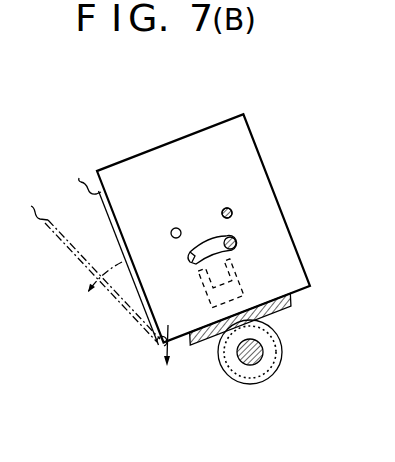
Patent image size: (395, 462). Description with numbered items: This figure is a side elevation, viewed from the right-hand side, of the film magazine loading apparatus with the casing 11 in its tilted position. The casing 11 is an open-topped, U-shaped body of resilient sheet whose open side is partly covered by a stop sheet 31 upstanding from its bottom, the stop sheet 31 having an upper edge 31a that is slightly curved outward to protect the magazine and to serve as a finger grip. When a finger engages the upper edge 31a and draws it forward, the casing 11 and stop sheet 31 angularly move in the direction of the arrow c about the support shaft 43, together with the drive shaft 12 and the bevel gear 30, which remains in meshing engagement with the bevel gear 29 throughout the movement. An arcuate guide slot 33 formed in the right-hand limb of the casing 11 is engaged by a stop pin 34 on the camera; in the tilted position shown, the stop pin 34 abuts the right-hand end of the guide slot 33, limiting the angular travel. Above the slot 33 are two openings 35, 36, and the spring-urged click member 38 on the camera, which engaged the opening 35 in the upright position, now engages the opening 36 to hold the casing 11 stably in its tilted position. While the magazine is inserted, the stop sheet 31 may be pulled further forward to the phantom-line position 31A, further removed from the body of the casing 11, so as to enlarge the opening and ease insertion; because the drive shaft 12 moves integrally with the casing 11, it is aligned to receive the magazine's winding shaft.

The casing 11 is at (154, 149).
The drive shaft 12 is at (210, 304).
The bevel gear 29 is at (263, 382).
The bevel gear 30 is at (205, 341).
The stop sheet 31 is at (109, 210).
The upper edge of stop sheet 31a is at (80, 184).
The pulled-forward position of stop sheet 31A is at (80, 257).
The arcuate guide slot 33 is at (189, 262).
The stop pin 34 is at (237, 243).
The opening 35 is at (174, 228).
The opening 36 is at (225, 208).
The click member 38 is at (233, 214).
The support shaft 43 is at (262, 356).
The arrow c is at (157, 341).